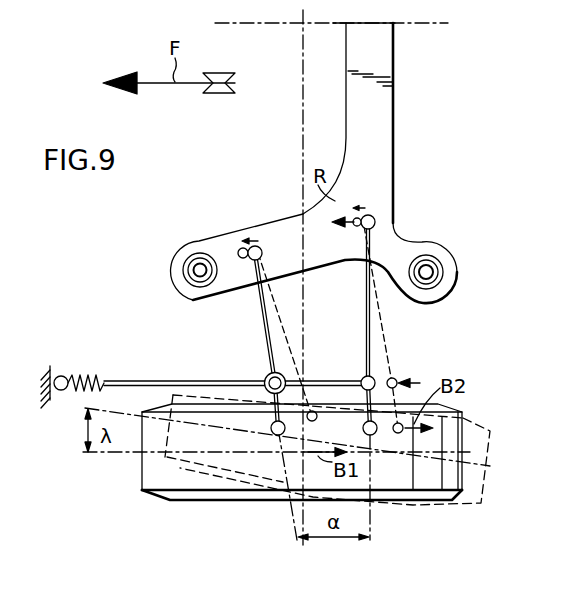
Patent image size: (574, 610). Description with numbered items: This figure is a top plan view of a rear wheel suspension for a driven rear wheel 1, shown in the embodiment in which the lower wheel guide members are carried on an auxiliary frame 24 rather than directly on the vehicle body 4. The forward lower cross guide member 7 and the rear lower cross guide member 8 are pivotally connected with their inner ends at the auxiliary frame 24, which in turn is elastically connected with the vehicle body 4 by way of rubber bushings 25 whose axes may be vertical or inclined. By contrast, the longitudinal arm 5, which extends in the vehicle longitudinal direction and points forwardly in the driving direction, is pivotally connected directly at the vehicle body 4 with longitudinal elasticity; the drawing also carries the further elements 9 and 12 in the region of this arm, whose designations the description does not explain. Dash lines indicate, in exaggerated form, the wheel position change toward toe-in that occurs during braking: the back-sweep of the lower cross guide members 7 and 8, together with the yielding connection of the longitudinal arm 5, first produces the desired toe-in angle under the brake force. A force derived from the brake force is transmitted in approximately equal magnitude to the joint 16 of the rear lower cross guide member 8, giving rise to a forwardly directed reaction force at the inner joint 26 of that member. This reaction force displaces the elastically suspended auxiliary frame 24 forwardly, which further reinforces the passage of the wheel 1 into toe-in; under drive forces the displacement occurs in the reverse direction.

The rear wheel 1 is at (150, 477).
The vehicle body 4 is at (47, 368).
The longitudinal arm 5 is at (146, 380).
The forward lower cross guide member 7 is at (267, 330).
The rear lower cross guide member 8 is at (373, 342).
The pivot joint 9 is at (258, 366).
The spring 12 is at (68, 400).
The joint 16 is at (383, 436).
The auxiliary frame 24 is at (378, 145).
The rubber bushings 25 is at (190, 281).
The inner joint 26 is at (373, 215).